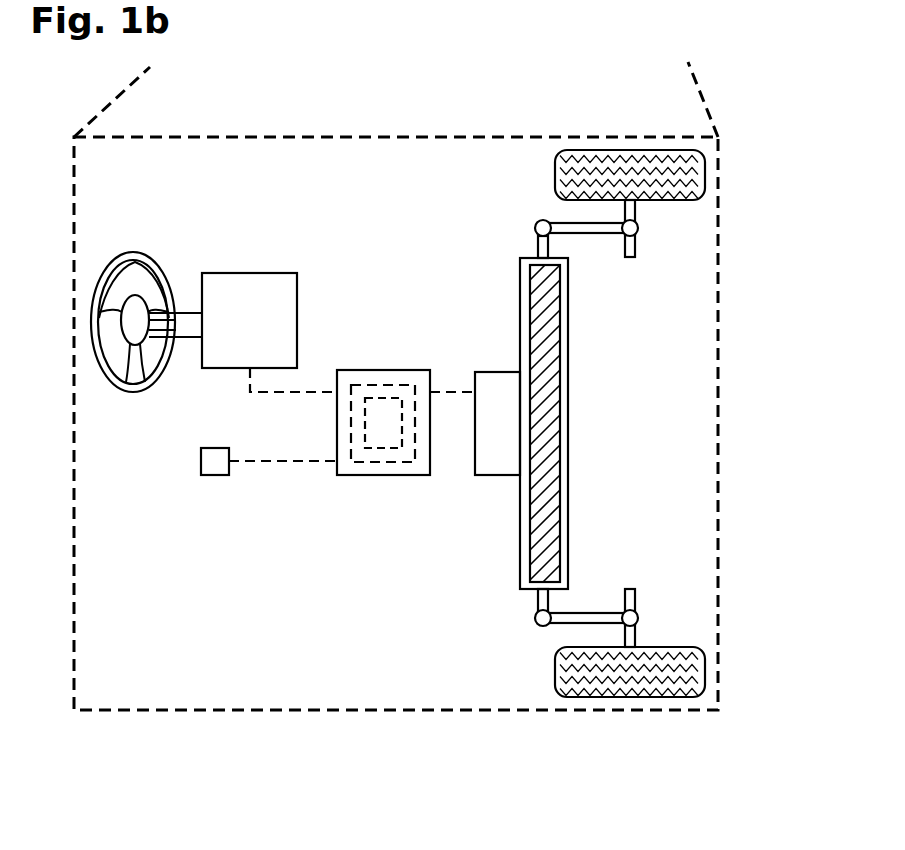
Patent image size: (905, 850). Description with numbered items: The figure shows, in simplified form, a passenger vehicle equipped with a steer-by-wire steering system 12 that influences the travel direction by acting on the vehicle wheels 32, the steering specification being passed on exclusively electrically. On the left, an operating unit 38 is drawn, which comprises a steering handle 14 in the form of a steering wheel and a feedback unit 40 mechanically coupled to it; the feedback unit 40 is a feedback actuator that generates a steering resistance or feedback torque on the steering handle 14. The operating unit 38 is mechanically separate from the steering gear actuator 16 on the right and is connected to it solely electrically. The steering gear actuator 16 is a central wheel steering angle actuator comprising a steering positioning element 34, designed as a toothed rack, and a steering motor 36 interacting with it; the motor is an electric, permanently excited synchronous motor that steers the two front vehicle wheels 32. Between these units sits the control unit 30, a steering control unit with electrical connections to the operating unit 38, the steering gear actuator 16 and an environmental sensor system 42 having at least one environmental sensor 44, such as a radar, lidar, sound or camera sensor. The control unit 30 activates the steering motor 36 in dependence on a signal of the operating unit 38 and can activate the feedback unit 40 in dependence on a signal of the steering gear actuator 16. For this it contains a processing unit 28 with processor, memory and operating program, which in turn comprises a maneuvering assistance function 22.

The steer-by-wire steering system 12 is at (682, 324).
The steering handle 14 is at (113, 255).
The steering gear actuator 16 is at (507, 258).
The maneuvering assistance function 22 is at (385, 398).
The processing unit 28 is at (385, 475).
The control unit 30 is at (328, 487).
The vehicle wheels 32 is at (705, 172).
The steering positioning element 34 is at (562, 524).
The steering motor 36 is at (492, 372).
The operating unit 38 is at (172, 190).
The feedback unit 40 is at (263, 272).
The environmental sensor system 42 is at (190, 487).
The environmental sensor 44 is at (201, 462).